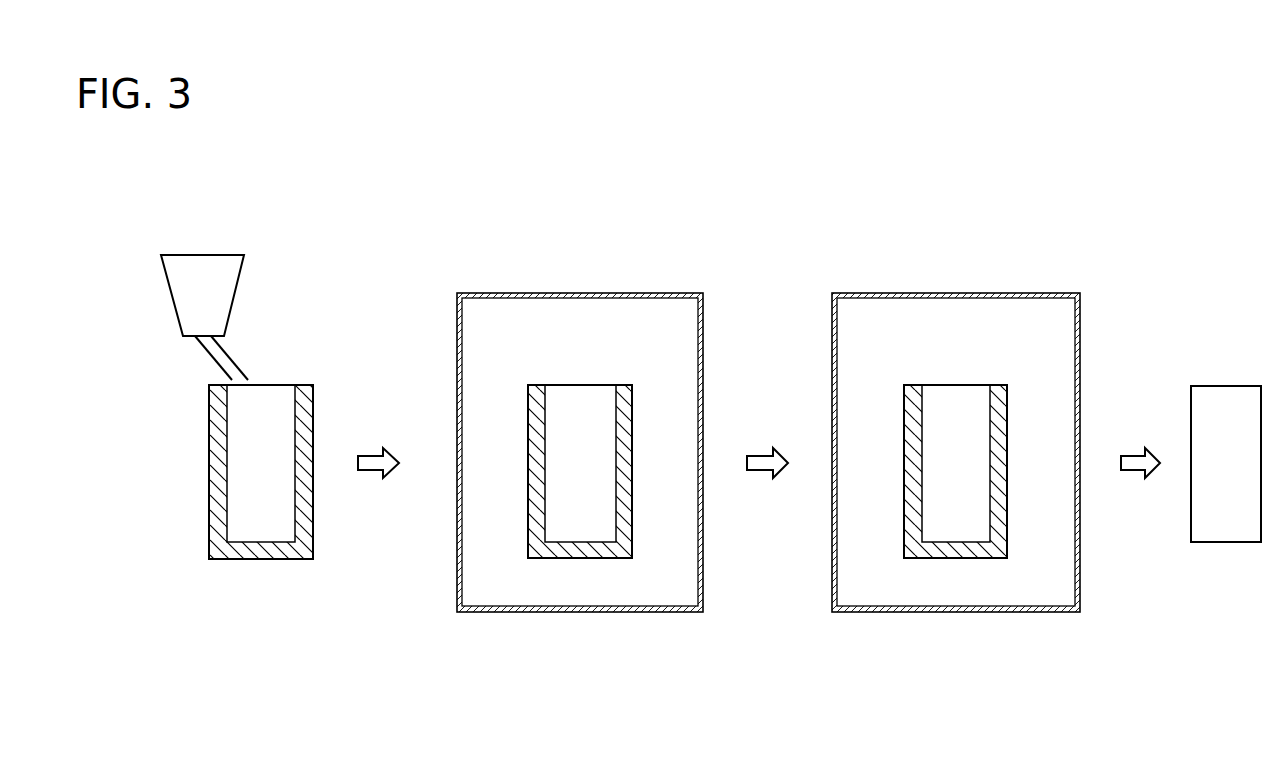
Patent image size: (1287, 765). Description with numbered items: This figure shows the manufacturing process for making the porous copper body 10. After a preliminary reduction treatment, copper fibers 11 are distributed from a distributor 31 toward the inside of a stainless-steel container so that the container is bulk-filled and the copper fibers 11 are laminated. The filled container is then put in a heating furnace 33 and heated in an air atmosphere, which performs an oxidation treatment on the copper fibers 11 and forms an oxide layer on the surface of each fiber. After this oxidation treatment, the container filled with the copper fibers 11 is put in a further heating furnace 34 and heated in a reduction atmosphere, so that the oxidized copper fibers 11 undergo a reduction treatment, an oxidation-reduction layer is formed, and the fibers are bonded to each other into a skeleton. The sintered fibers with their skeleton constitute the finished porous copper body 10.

The porous copper body 10 is at (1223, 558).
The copper fibers 11 is at (272, 380).
The distributor 31 is at (203, 268).
The heating furnace 33 is at (502, 612).
The heating furnace 34 is at (875, 612).